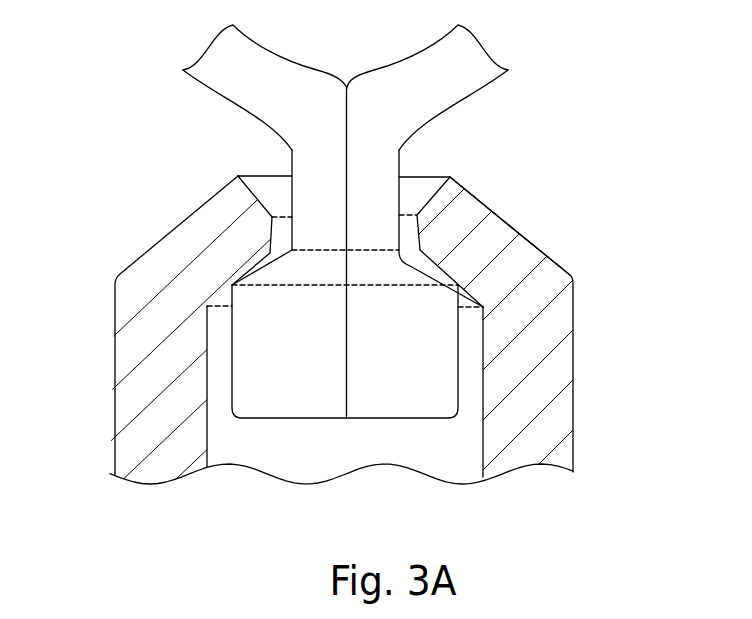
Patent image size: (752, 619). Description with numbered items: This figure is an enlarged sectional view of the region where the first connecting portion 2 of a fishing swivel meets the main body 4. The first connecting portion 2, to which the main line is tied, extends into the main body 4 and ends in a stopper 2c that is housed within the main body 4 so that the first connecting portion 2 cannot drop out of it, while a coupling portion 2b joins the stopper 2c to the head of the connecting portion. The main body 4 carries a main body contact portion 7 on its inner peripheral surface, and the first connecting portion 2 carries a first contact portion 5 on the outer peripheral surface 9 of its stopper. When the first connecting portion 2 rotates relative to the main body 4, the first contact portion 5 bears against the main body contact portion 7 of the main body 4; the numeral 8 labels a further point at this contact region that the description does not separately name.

The first connecting portion 2 is at (457, 85).
The stopper 2c is at (378, 148).
The coupling portion 2b is at (428, 377).
The main body 4 is at (120, 367).
The first contact portion 5 is at (511, 227).
The main body contact portion 7 is at (535, 248).
The inner corner 8 is at (489, 312).
The outer peripheral surface 9 is at (478, 196).